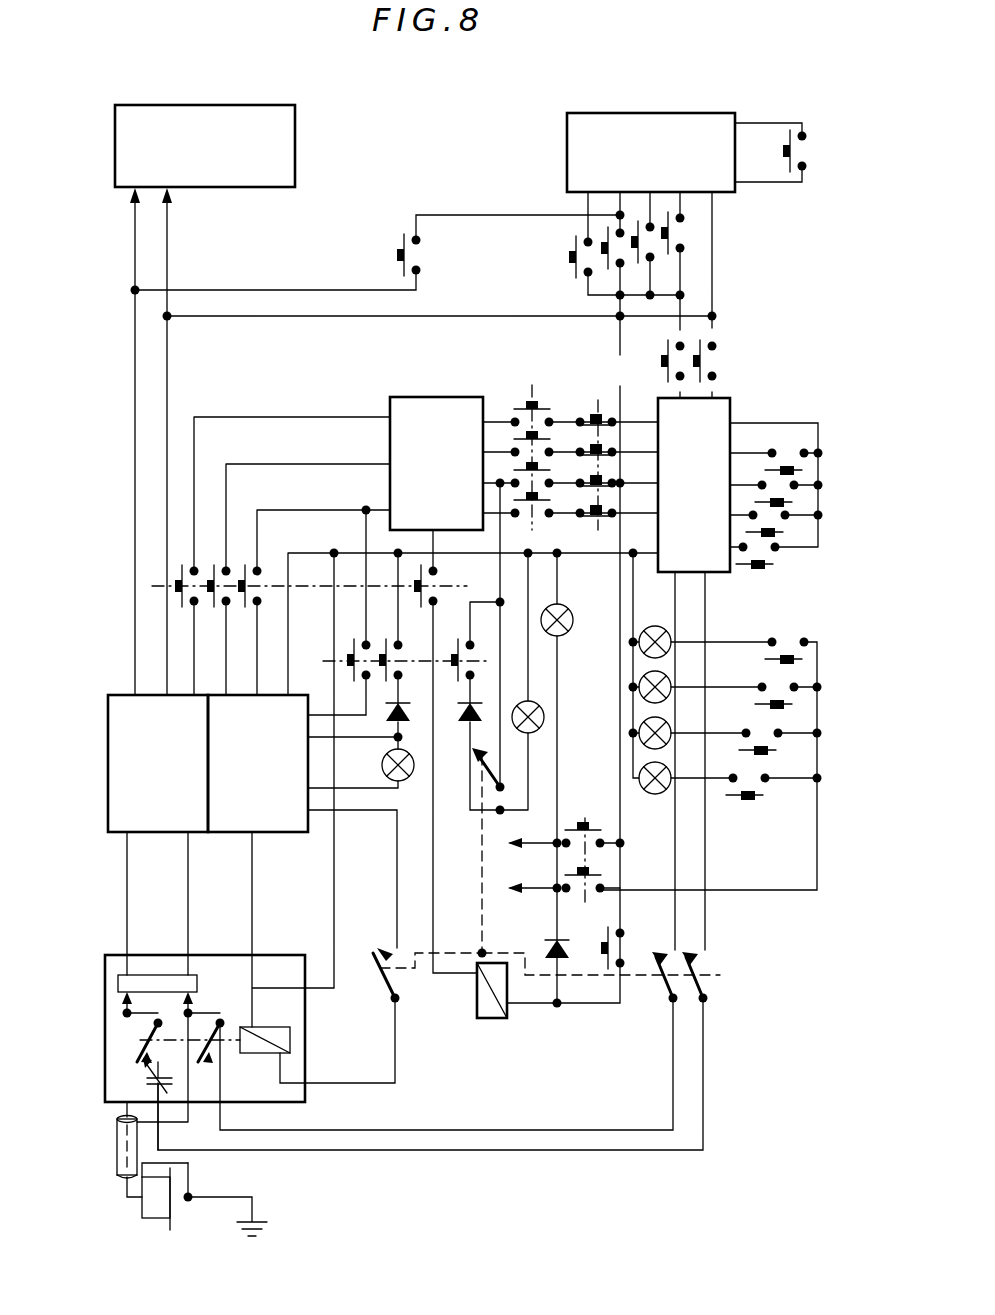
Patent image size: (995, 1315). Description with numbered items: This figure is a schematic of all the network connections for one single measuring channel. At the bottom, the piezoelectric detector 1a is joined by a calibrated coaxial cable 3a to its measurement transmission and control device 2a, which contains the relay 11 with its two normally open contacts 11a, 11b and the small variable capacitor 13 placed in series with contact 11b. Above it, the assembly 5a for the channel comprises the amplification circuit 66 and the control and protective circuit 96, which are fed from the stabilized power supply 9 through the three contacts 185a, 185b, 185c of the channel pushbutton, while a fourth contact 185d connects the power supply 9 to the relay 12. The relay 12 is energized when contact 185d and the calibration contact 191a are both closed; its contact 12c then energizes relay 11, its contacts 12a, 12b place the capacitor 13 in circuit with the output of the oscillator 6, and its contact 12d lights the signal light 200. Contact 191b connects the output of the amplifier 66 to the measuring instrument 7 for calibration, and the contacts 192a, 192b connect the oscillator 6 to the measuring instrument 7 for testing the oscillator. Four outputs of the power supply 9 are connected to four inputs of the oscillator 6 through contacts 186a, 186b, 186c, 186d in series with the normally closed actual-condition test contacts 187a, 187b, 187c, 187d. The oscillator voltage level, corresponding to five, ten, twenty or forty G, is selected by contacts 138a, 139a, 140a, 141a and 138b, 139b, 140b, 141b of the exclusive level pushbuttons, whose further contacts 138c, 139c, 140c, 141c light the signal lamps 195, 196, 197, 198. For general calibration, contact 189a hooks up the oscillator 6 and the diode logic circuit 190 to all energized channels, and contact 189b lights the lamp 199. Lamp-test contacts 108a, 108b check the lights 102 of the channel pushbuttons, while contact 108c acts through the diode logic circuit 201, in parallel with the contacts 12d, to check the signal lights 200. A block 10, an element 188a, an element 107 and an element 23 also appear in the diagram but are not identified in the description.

The display unit 10 is at (205, 146).
The measuring instrument 7 is at (651, 152).
The stabilized power supply 9 is at (436, 463).
The oscillator 6 is at (694, 485).
The amplification circuit 66 is at (158, 763).
The control and protective circuit 96 is at (258, 763).
The assembly 5a is at (111, 696).
The measurement transmission and control device 2a is at (108, 957).
The switch contact 188a is at (808, 157).
The contact 191b is at (397, 252).
The contact 138b is at (569, 243).
The contact 139b is at (605, 270).
The contact 140b is at (640, 247).
The contact 141b is at (670, 232).
The contact 192a is at (665, 363).
The contact 192b is at (720, 359).
The contact 186a is at (532, 400).
The contact 186b is at (520, 444).
The contact 186c is at (520, 476).
The contact 186d is at (520, 506).
The N/C contact 187a is at (597, 412).
The N/C contact 187b is at (607, 446).
The N/C contact 187c is at (608, 475).
The N/C contact 187d is at (608, 508).
The contact 141a is at (795, 467).
The contact 140a is at (785, 499).
The contact 139a is at (775, 531).
The contact 138a is at (767, 561).
The contact 185a is at (180, 573).
The contact 185b is at (212, 601).
The contact 185c is at (250, 576).
The contact 185d is at (425, 591).
The contact 108a is at (388, 667).
The contact 108b is at (352, 666).
The contact 108c is at (456, 652).
The diode 107 is at (392, 712).
The diode logic circuit 201 is at (462, 713).
The lamp 102 is at (382, 767).
The signal lamp 199 is at (583, 607).
The signal light 200 is at (541, 735).
The signal lamp 198 is at (655, 626).
The signal lamp 197 is at (641, 681).
The signal lamp 196 is at (641, 729).
The signal lamp 195 is at (641, 770).
The contact 141c is at (760, 659).
The contact 140c is at (760, 704).
The contact 139c is at (755, 750).
The contact 138c is at (740, 795).
The contact 12d is at (478, 768).
The contact 189b is at (602, 808).
The contact 189a is at (575, 874).
The diodes logic circuit 190 is at (548, 945).
The N/O contact 191a is at (608, 941).
The N/O contact 12a is at (667, 1003).
The N/O contact 12b is at (706, 982).
The contact 12c is at (390, 980).
The relay 12 is at (490, 1020).
The sensor 23 is at (150, 983).
The relay 11 is at (296, 1040).
The N/O contact 11a is at (212, 1062).
The N/O contact 11b is at (148, 1036).
The variable capacitor 13 is at (145, 1080).
The calibrated coaxial cable 3a is at (116, 1165).
The piezoelectric detector 1a is at (171, 1220).